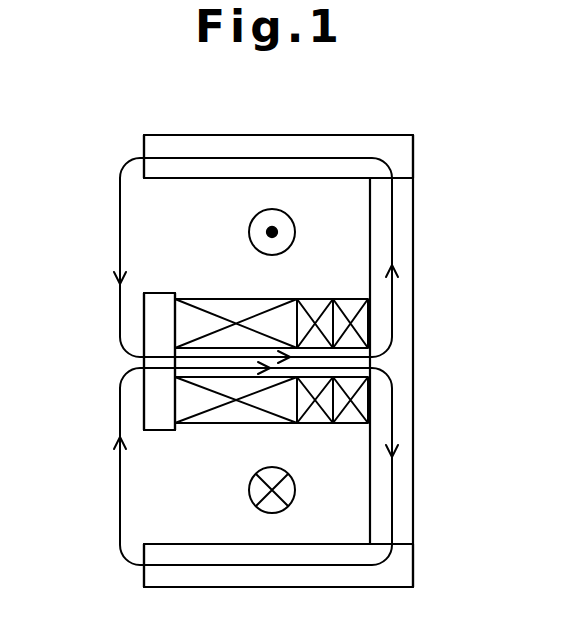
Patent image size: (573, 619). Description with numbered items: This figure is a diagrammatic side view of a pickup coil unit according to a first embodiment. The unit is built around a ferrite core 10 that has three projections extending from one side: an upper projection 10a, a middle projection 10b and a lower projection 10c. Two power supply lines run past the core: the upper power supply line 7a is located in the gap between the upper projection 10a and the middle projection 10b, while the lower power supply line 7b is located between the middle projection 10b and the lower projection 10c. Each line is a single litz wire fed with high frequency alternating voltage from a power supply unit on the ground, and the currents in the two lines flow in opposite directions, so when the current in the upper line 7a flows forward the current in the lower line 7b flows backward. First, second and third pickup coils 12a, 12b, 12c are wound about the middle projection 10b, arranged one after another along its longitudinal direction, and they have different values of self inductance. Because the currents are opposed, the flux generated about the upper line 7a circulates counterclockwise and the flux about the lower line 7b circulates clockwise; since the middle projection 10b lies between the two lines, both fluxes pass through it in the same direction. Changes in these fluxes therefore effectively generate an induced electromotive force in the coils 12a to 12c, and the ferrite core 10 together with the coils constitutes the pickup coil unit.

The ferrite core 10 is at (413, 160).
The upper projection 10a is at (152, 141).
The middle projection 10b is at (187, 372).
The lower projection 10c is at (158, 575).
The first pickup coil 12a is at (207, 420).
The second pickup coil 12b is at (316, 299).
The third pickup coil 12c is at (350, 423).
The upper power supply line 7a is at (248, 232).
The lower power supply line 7b is at (248, 498).